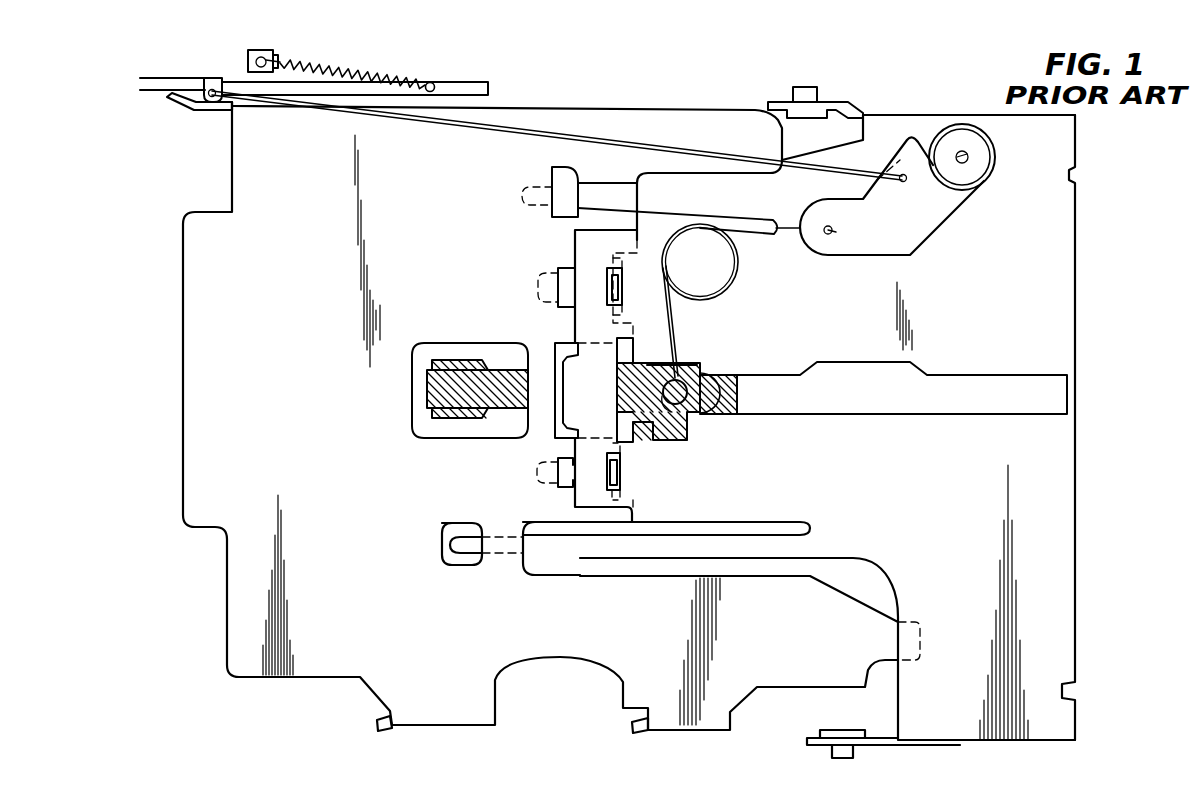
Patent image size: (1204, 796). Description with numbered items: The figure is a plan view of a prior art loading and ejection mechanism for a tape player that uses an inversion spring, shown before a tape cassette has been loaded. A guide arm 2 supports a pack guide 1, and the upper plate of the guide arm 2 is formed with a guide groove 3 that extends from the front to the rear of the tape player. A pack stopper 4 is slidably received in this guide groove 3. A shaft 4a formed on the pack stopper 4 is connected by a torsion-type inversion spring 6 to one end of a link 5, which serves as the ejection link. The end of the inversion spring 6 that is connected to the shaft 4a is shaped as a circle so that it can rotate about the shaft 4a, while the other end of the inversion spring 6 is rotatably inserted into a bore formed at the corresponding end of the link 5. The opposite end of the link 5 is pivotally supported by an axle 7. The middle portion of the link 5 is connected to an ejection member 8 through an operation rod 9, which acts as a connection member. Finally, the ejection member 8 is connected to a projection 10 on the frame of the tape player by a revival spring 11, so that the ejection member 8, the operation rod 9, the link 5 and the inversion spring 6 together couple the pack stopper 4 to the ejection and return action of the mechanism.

The pack guide 1 is at (318, 660).
The guide arm 2 is at (1078, 281).
The guide groove 3 is at (1043, 397).
The pack stopper 4 is at (690, 427).
The shaft 4a is at (700, 413).
The link 5 is at (940, 205).
The inversion spring 6 is at (687, 222).
The axle 7 is at (957, 152).
The ejection member 8 is at (465, 82).
The operation rod 9 is at (528, 130).
The projection 10 is at (248, 62).
The revival spring 11 is at (342, 80).